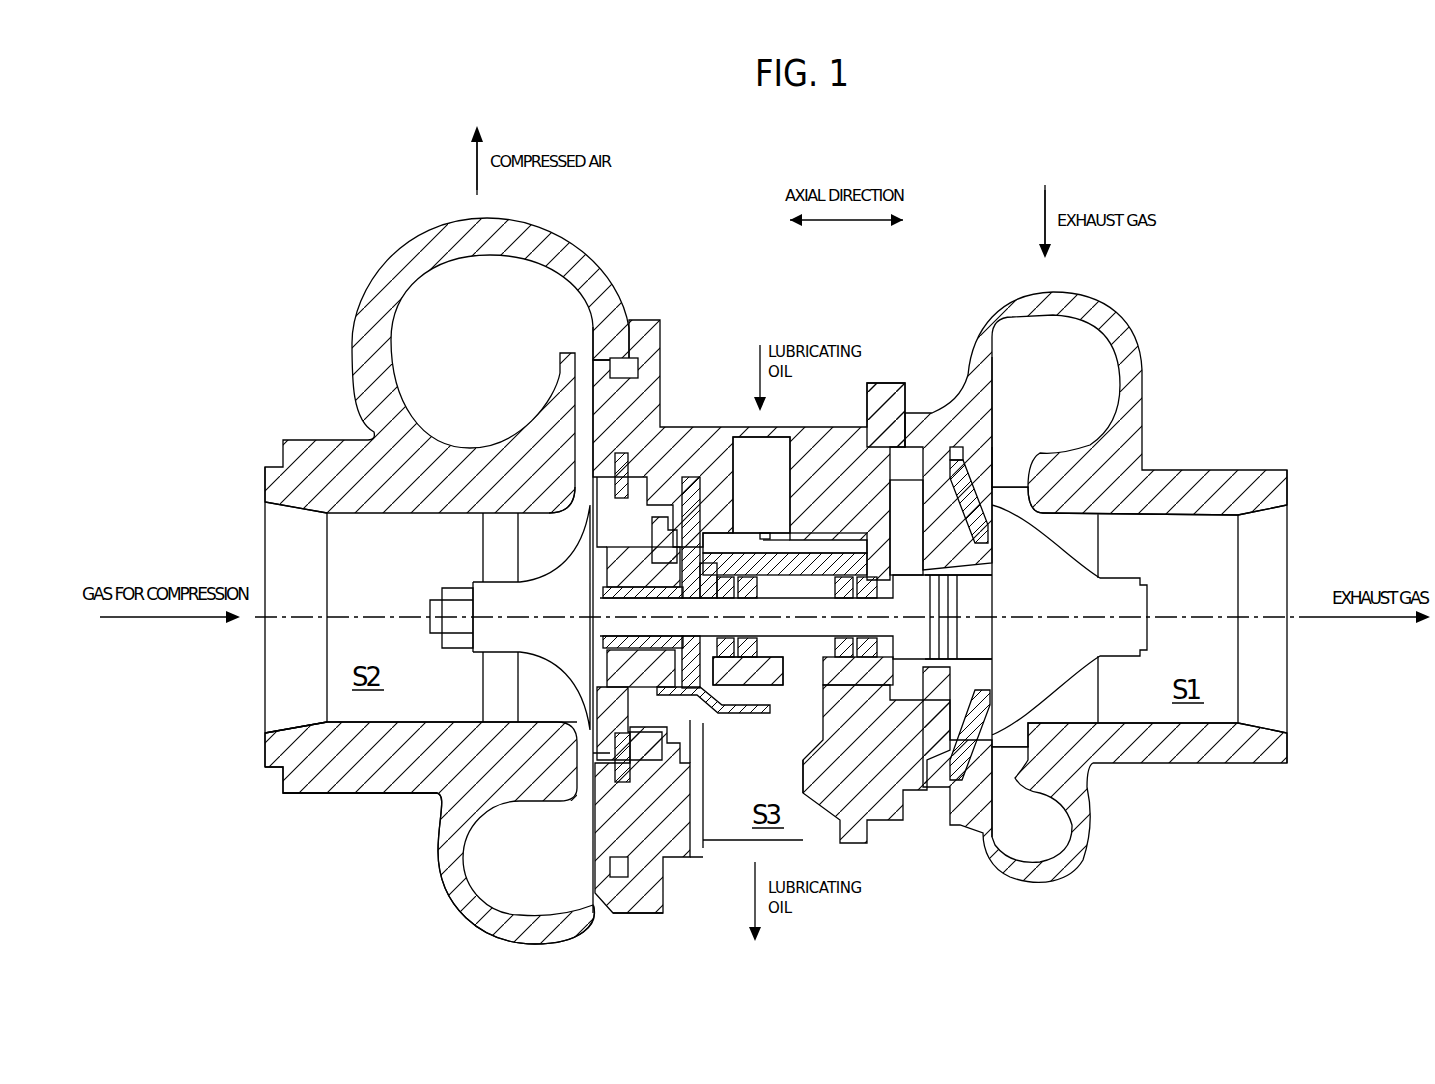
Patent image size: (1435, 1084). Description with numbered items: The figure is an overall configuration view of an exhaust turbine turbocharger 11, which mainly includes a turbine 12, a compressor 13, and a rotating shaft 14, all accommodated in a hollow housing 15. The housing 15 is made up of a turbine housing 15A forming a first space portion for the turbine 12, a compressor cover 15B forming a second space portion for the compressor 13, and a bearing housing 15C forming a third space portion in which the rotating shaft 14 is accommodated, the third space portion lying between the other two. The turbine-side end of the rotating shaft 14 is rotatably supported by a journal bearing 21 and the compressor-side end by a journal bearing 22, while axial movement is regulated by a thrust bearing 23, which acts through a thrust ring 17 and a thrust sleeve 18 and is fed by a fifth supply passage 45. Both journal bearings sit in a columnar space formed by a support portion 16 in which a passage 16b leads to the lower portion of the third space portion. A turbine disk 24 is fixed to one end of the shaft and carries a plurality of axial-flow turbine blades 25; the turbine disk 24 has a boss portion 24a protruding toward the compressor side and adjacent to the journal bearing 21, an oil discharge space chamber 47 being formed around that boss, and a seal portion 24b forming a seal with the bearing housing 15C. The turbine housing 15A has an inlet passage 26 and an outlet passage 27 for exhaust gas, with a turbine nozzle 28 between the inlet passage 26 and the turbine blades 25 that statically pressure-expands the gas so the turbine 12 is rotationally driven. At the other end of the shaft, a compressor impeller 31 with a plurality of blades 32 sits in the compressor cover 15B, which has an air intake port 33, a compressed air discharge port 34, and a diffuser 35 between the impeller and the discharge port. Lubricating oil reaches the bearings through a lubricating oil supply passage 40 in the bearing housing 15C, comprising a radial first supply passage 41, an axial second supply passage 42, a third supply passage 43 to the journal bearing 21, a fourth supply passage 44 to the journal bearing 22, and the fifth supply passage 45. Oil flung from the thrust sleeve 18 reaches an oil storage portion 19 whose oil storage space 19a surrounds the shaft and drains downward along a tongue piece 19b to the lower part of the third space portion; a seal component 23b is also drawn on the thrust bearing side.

The exhaust turbine turbocharger 11 is at (1238, 295).
The turbine 12 is at (1260, 655).
The compressor 13 is at (290, 533).
The rotating shaft 14 is at (805, 645).
The housing 15 is at (697, 428).
The turbine housing 15A is at (1118, 318).
The compressor cover 15B is at (383, 262).
The bearing housing 15C is at (842, 422).
The support portion 16 is at (777, 688).
The passage 16b is at (848, 648).
The thrust ring 17 is at (690, 637).
The thrust sleeve 18 is at (612, 588).
The oil storage portion 19 is at (700, 718).
The oil storage space 19a is at (668, 545).
The tongue piece 19b is at (745, 728).
The journal bearing 21 is at (875, 655).
The journal bearing 22 is at (800, 642).
The thrust bearing 23 is at (712, 523).
The seal plate portion 23b is at (697, 497).
The turbine disk 24 is at (1127, 577).
The boss portion 24a is at (912, 490).
The seal portion 24b is at (950, 660).
The turbine blades 25 is at (1093, 553).
The inlet passage 26 is at (1043, 215).
The outlet passage 27 is at (1212, 720).
The turbine nozzle 28 is at (1027, 470).
The compressor impeller 31 is at (497, 588).
The blades 32 is at (525, 677).
The air intake port 33 is at (315, 722).
The compressed air discharge port 34 is at (477, 162).
The diffuser 35 is at (567, 430).
The lubricating oil supply passage 40 is at (754, 458).
The first supply passage 41 is at (777, 545).
The second supply passage 42 is at (780, 545).
The third supply passage 43 is at (858, 560).
The fourth supply passage 44 is at (740, 555).
The fifth supply passage 45 is at (718, 540).
The oil discharge space chamber 47 is at (907, 588).